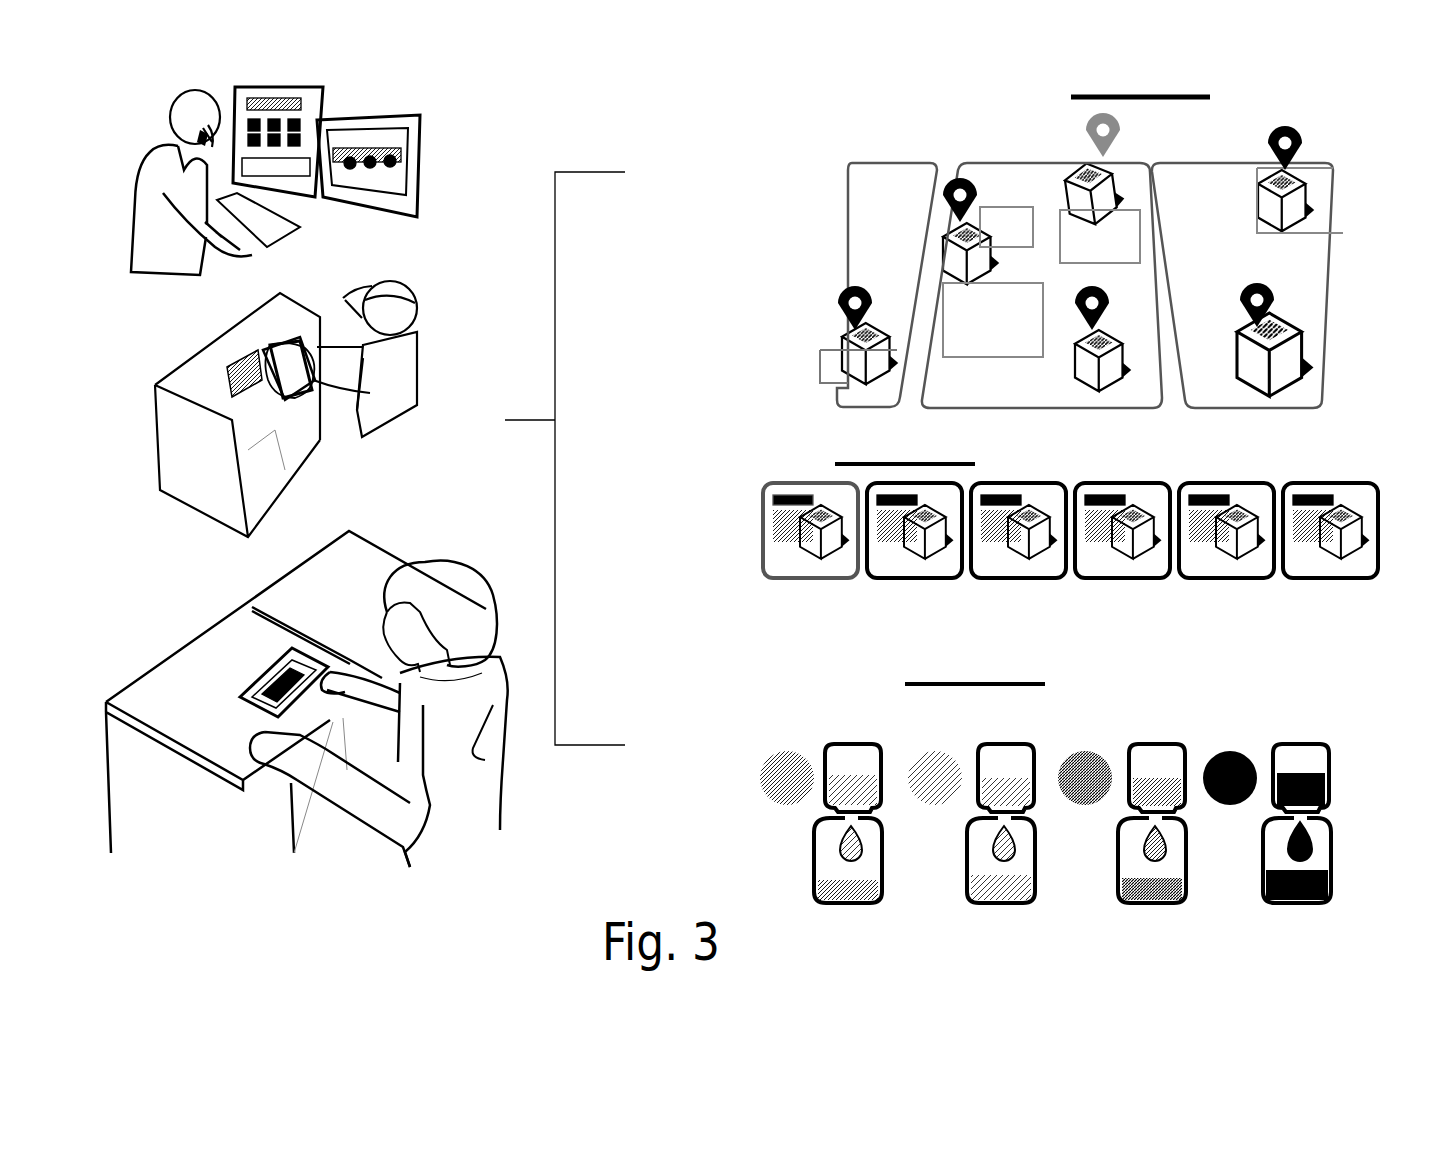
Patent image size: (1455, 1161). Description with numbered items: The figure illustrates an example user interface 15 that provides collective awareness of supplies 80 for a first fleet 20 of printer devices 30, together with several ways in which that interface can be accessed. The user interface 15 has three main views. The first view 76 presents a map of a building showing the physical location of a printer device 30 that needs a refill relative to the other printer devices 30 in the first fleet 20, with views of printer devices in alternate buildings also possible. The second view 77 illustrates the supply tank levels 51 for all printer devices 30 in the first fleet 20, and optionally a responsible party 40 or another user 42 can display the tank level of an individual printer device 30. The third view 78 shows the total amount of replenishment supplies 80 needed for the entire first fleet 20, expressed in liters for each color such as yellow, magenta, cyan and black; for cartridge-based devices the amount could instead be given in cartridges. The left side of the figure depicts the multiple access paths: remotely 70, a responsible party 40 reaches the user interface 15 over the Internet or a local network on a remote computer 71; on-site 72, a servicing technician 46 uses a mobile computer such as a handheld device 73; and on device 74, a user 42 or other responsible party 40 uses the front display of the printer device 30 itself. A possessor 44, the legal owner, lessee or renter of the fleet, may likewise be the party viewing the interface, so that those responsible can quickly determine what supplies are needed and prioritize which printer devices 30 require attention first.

The user interface 15 is at (368, 118).
The first fleet 20 is at (1357, 284).
The printer device 30 is at (216, 389).
The responsible party 40 is at (228, 255).
The user 42 is at (465, 722).
The possessor 44 is at (176, 256).
The servicing technician 46 is at (408, 379).
The supply tank levels 51 is at (1388, 560).
The remote access 70 is at (429, 387).
The remote computer 71 is at (418, 200).
The on-site access 72 is at (290, 381).
The handheld device 73 is at (270, 392).
The on-device access 74 is at (298, 660).
The first view 76 is at (1061, 235).
The second view 77 is at (1042, 500).
The third view 78 is at (1050, 773).
The supplies 80 is at (1362, 840).